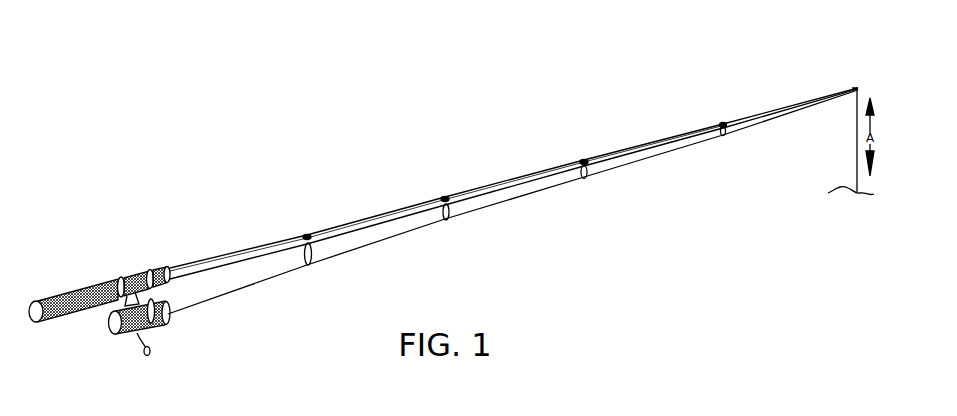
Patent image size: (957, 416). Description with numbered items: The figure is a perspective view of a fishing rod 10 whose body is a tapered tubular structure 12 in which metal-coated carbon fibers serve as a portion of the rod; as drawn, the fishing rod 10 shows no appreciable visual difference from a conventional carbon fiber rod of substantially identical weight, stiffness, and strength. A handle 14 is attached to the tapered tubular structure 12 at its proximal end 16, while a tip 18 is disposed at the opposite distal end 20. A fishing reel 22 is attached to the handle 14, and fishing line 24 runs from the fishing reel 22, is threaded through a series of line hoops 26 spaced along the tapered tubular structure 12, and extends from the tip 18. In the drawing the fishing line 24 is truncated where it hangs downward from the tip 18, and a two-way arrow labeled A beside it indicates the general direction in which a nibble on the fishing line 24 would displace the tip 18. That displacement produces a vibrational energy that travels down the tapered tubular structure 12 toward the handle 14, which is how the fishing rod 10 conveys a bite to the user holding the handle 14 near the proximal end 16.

The fishing rod 10 is at (448, 201).
The tapered tubular structure 12 is at (503, 183).
The handle 14 is at (82, 288).
The proximal end 16 is at (27, 349).
The tip 18 is at (856, 86).
The distal end 20 is at (868, 62).
The fishing reel 22 is at (128, 334).
The fishing line 24 is at (245, 292).
The line hoops 26 is at (308, 265).